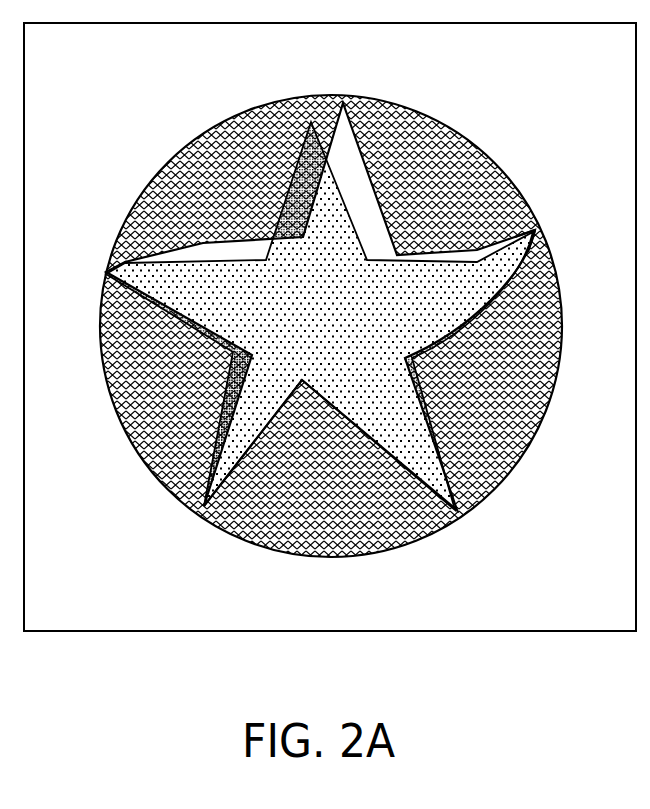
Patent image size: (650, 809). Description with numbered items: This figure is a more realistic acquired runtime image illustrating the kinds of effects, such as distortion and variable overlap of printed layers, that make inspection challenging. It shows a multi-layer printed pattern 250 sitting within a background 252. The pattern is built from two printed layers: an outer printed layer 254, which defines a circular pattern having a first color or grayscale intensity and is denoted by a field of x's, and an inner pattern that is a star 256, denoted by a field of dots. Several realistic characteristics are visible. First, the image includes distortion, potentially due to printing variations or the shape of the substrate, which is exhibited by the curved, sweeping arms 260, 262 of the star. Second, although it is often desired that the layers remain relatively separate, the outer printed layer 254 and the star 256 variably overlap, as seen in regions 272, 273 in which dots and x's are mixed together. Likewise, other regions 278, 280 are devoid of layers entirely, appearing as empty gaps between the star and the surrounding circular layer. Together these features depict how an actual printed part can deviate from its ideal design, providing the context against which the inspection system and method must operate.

The multi-layer printed pattern 250 is at (559, 202).
The background 252 is at (577, 538).
The outer printed layer 254 is at (522, 348).
The star 256 is at (485, 287).
The arm of the star 260 is at (535, 228).
The arm of the star 262 is at (148, 248).
The overlap region 272 is at (300, 205).
The overlap region 273 is at (228, 383).
The region devoid of layers 278 is at (207, 250).
The region devoid of layers 280 is at (480, 253).